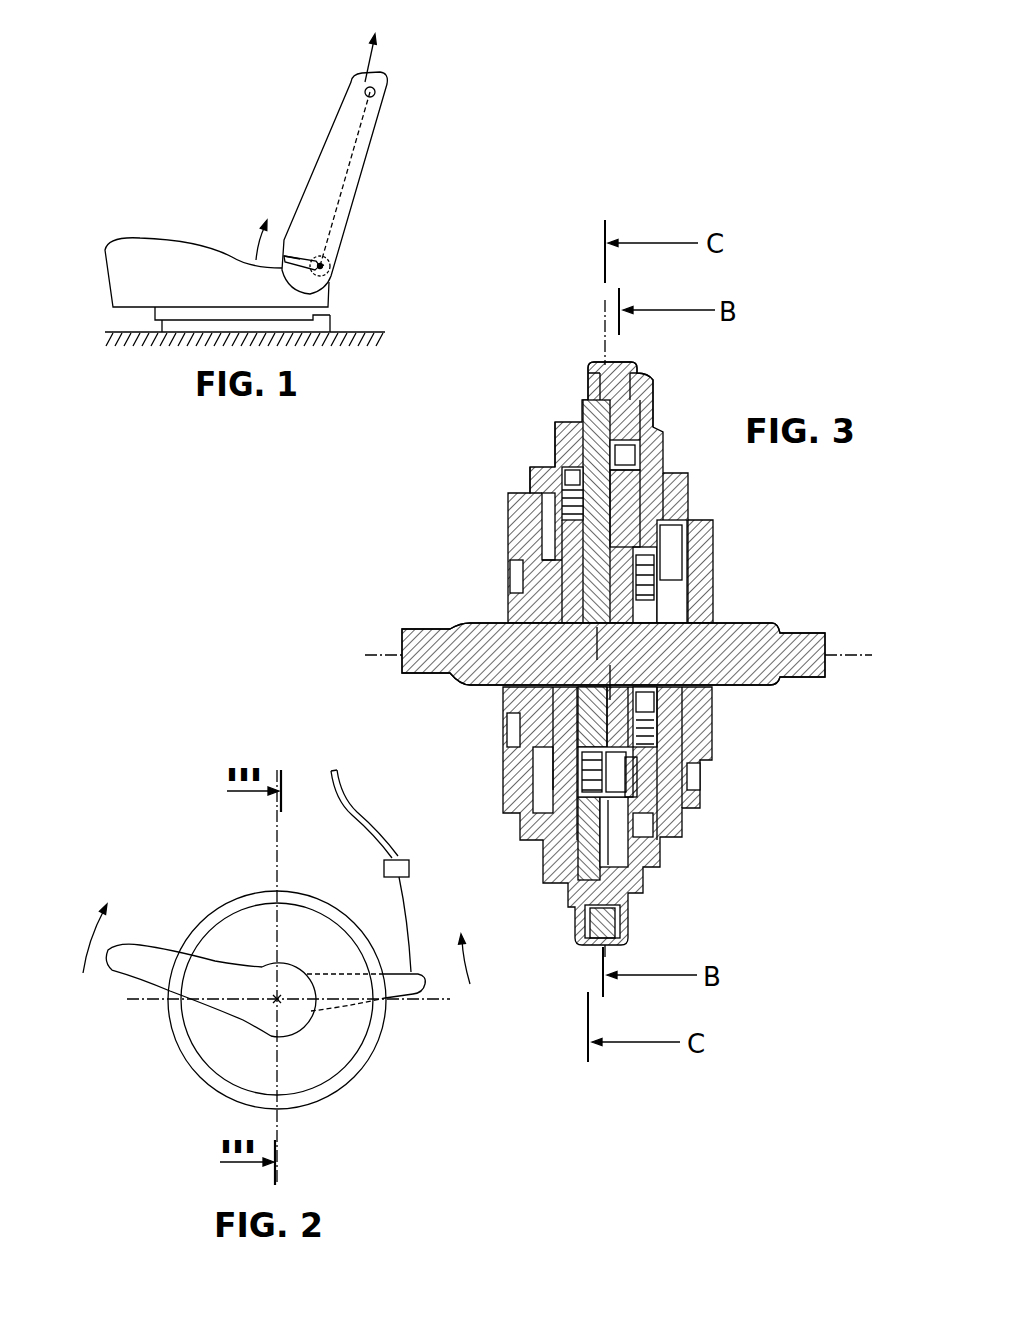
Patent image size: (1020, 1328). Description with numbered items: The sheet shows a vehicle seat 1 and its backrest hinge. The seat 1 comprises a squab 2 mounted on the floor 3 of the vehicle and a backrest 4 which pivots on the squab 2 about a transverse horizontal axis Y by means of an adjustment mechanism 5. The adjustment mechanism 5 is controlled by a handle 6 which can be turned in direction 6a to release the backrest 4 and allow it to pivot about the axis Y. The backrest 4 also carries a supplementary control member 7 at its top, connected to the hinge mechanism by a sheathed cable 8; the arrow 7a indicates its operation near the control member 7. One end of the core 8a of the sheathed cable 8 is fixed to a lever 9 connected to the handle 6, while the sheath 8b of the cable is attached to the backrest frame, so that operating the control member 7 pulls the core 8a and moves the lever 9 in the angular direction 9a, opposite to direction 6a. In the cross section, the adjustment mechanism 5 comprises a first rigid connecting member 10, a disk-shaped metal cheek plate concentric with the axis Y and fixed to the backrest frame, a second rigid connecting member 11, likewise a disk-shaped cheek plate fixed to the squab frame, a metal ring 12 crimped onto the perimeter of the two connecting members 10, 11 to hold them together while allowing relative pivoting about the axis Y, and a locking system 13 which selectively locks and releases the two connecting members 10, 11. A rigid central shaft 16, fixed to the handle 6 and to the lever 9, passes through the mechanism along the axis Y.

In FIG. 1, the vehicle seat 1 is at (248, 154).
In FIG. 1, the squab 2 is at (122, 253).
In FIG. 1, the floor 3 is at (363, 330).
In FIG. 1, the backrest 4 is at (363, 138).
In FIG. 1, the adjustment mechanism 5 is at (330, 267).
In FIG. 2, the adjustment mechanism 5 is at (281, 994).
In FIG. 1, the handle 6 is at (293, 253).
In FIG. 2, the handle 6 is at (133, 975).
In FIG. 1, the direction 6a is at (255, 247).
In FIG. 2, the direction 6a is at (96, 955).
In FIG. 1, the supplementary control member 7 is at (377, 88).
In FIG. 1, the backrest release direction 7a is at (367, 67).
In FIG. 1, the sheathed cable 8 is at (343, 187).
In FIG. 2, the sheathed cable 8 is at (370, 860).
In FIG. 2, the core 8a is at (406, 918).
In FIG. 2, the sheath 8b is at (350, 812).
In FIG. 2, the lever 9 is at (412, 986).
In FIG. 2, the angular direction 9a is at (470, 963).
In FIG. 3, the first rigid connecting member 10 is at (610, 475).
In FIG. 2, the second rigid connecting member 11 is at (215, 1053).
In FIG. 3, the second rigid connecting member 11 is at (623, 704).
In FIG. 2, the metal ring 12 is at (248, 902).
In FIG. 3, the metal ring 12 is at (638, 366).
In FIG. 3, the locking system 13 is at (660, 783).
In FIG. 3, the central shaft 16 is at (775, 635).
In FIG. 1, the axis Y is at (330, 263).
In FIG. 2, the axis Y is at (277, 999).
In FIG. 3, the axis Y is at (852, 657).